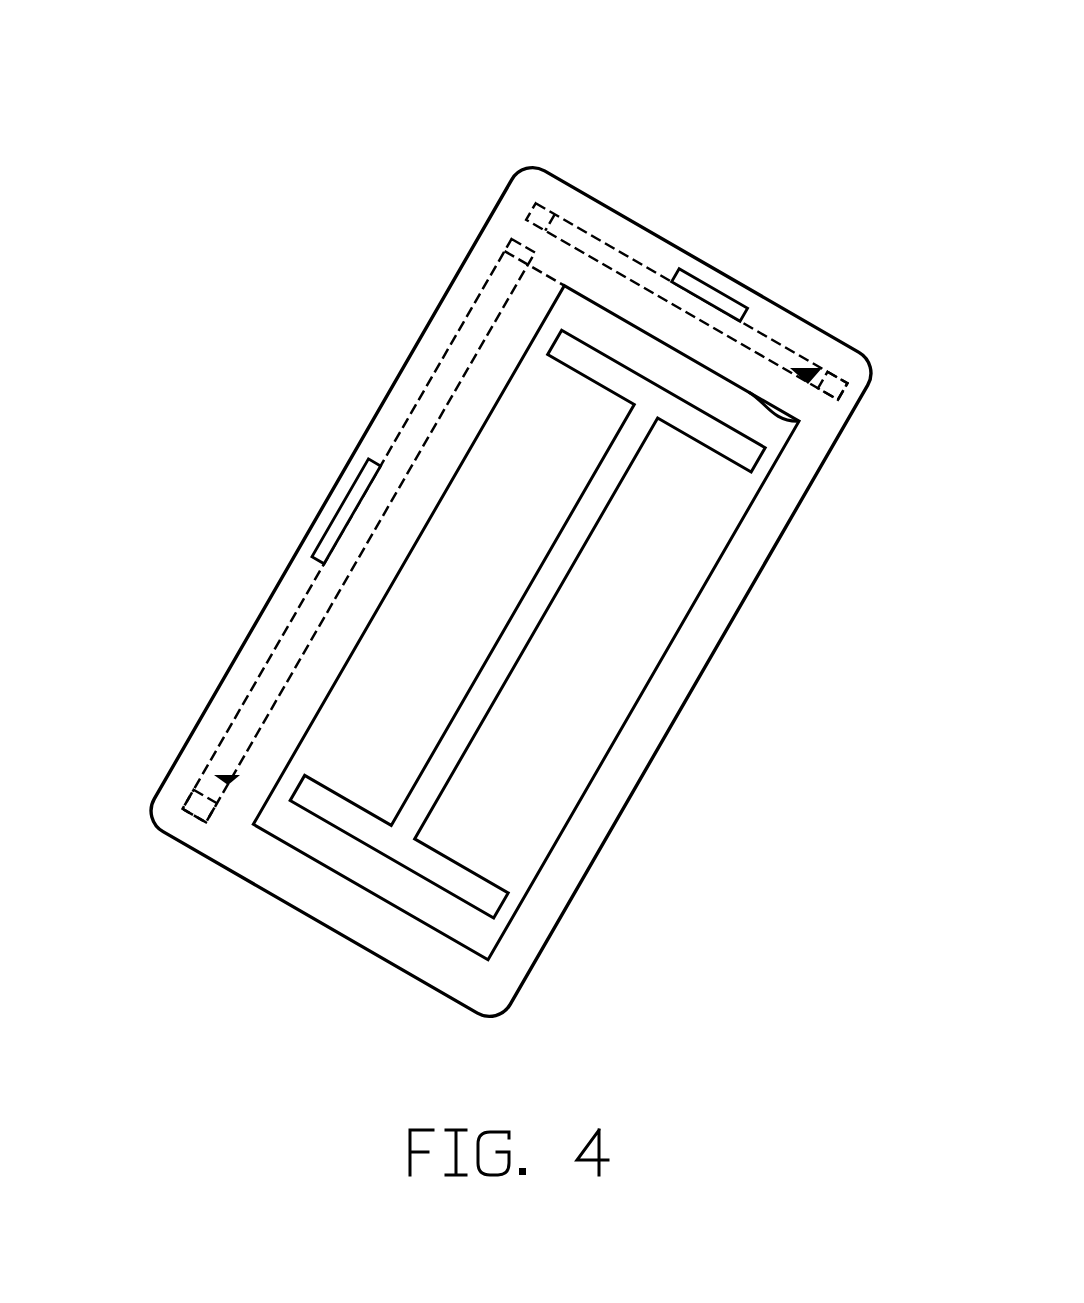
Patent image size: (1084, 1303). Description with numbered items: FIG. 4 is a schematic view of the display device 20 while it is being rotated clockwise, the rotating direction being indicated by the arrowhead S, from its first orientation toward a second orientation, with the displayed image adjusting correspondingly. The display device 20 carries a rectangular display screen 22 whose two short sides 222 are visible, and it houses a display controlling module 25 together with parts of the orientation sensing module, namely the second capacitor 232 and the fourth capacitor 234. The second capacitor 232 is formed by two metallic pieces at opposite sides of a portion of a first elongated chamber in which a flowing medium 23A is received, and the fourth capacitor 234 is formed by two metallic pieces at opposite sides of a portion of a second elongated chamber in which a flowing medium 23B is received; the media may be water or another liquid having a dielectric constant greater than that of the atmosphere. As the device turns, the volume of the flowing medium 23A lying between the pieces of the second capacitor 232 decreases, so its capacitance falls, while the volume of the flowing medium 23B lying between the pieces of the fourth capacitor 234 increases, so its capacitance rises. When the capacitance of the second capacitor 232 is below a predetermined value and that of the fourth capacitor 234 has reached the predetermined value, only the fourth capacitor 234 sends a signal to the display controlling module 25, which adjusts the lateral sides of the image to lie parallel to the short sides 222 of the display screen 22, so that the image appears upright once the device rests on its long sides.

The display device 20 is at (136, 810).
The display screen 22 is at (613, 672).
The short sides 222 is at (795, 428).
The display controlling module 25 is at (540, 302).
The fourth capacitor 234 is at (833, 375).
The second capacitor 232 is at (207, 800).
The flowing medium 23B is at (806, 368).
The flowing medium 23A is at (227, 775).
The arrowhead S is at (440, 49).